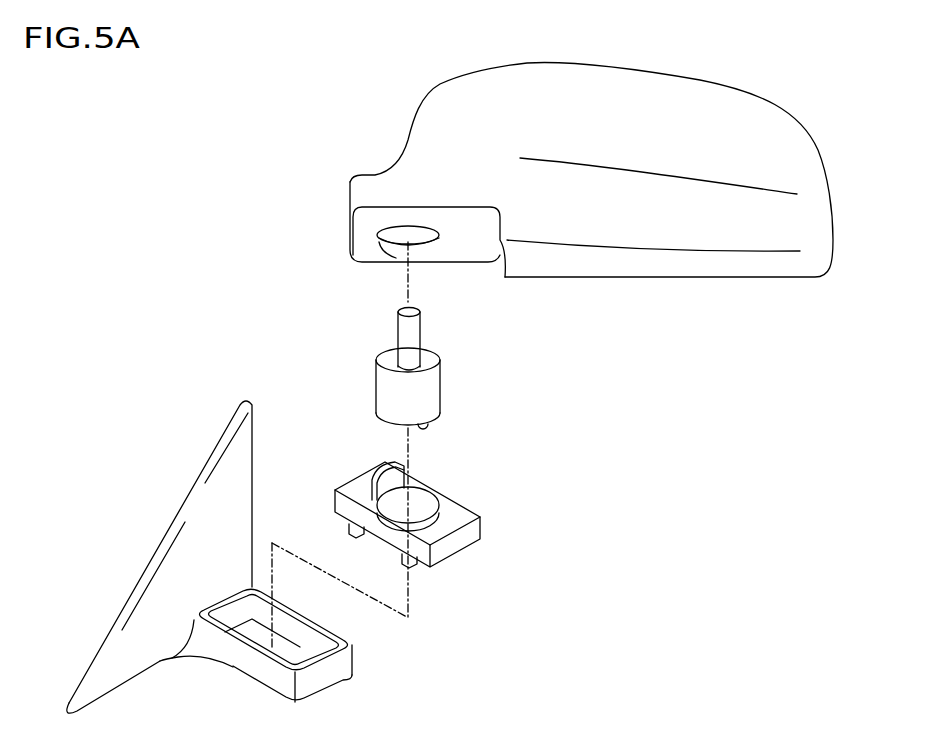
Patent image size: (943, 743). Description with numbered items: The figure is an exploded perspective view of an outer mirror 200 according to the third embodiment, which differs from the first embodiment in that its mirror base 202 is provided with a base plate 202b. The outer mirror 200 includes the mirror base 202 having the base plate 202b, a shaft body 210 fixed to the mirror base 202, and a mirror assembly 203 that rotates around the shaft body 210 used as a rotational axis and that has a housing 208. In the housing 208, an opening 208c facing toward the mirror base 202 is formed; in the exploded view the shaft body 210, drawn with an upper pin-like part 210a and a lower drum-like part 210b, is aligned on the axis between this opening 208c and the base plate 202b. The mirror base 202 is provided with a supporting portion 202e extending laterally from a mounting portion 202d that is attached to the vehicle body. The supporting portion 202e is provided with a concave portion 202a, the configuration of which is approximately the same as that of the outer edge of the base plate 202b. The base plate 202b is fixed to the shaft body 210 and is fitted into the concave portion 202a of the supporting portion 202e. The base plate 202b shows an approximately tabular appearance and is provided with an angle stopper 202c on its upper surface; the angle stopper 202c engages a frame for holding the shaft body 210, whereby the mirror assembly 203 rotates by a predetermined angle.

The outer mirror 200 is at (660, 389).
The mirror base 202 is at (358, 688).
The concave portion 202a is at (323, 640).
The base plate 202b is at (481, 525).
The angle stopper 202c is at (376, 472).
The mounting portion 202d is at (197, 520).
The supporting portion 202e is at (245, 664).
The mirror assembly 203 is at (618, 67).
The housing 208 is at (670, 280).
The opening 208c is at (347, 253).
The shaft body 210 is at (491, 463).
The pivot shaft 210a is at (421, 332).
The pivot body 210b is at (441, 384).